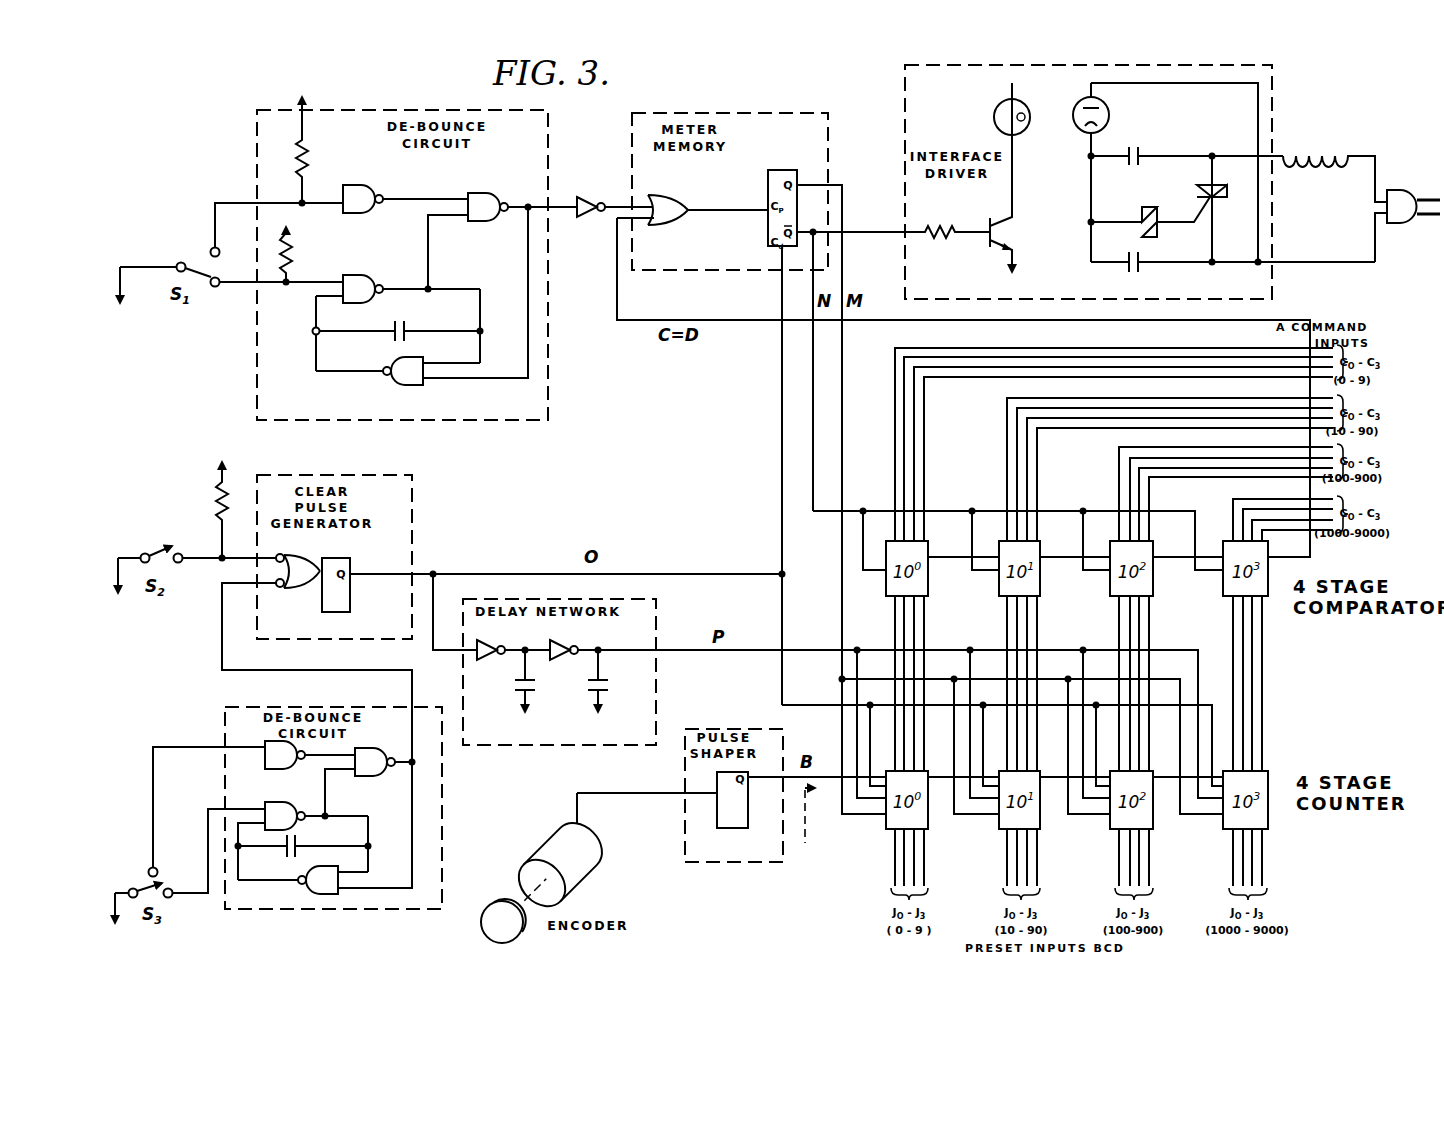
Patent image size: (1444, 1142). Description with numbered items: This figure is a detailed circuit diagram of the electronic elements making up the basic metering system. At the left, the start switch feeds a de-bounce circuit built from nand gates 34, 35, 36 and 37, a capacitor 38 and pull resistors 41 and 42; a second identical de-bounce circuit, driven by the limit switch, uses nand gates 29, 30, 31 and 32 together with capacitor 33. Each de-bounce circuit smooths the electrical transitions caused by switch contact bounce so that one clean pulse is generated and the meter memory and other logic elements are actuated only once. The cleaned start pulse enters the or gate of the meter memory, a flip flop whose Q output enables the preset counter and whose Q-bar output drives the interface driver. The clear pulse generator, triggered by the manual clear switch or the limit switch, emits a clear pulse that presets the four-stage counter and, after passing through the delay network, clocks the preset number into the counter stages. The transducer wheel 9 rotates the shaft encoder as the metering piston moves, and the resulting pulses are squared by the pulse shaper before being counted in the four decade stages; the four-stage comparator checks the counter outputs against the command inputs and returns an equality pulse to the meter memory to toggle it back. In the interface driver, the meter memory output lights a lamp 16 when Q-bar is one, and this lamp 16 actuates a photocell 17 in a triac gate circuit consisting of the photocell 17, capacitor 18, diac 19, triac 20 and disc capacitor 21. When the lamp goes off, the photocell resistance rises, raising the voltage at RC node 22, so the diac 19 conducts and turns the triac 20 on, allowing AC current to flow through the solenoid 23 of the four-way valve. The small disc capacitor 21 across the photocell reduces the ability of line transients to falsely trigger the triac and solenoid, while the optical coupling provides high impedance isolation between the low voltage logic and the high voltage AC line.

The transducer wheel 9 is at (524, 933).
The lamp 16 is at (995, 108).
The photocell 17 is at (1109, 111).
The capacitor 18 is at (1141, 148).
The diac 19 is at (1143, 212).
The triac 20 is at (1216, 198).
The disc capacitor 21 is at (1142, 255).
The RC node 22 is at (1086, 157).
The solenoid 23 is at (1322, 153).
The nand gate 29 is at (266, 770).
The nand gate 30 is at (362, 776).
The nand gate 31 is at (280, 802).
The nand gate 32 is at (300, 890).
The capacitor 33 is at (299, 839).
The nand gate 34 is at (366, 185).
The nand gate 35 is at (478, 192).
The nand gate 36 is at (355, 275).
The nand gate 37 is at (392, 386).
The capacitor 38 is at (405, 321).
The pull resistor 41 is at (294, 251).
The pull resistor 42 is at (310, 151).